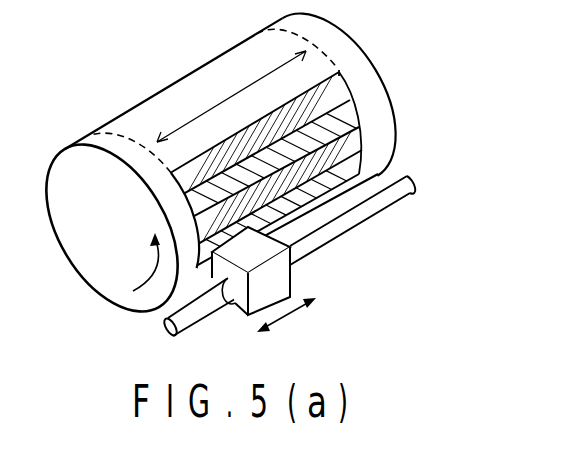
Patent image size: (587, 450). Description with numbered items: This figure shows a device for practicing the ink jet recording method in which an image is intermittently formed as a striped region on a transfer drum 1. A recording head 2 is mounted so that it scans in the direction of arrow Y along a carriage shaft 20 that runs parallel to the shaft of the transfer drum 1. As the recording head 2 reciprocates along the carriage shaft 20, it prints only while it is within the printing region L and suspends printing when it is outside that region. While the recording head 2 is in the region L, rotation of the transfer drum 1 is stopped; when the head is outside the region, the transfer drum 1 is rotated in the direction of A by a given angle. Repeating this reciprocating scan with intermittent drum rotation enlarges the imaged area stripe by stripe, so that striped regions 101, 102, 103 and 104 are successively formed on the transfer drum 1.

The transfer drum 1 is at (347, 42).
The striped region 101 is at (350, 78).
The striped region 102 is at (352, 110).
The striped region 103 is at (352, 133).
The striped region 104 is at (356, 164).
The carriage shaft 20 is at (381, 210).
The recording head 2 is at (285, 281).